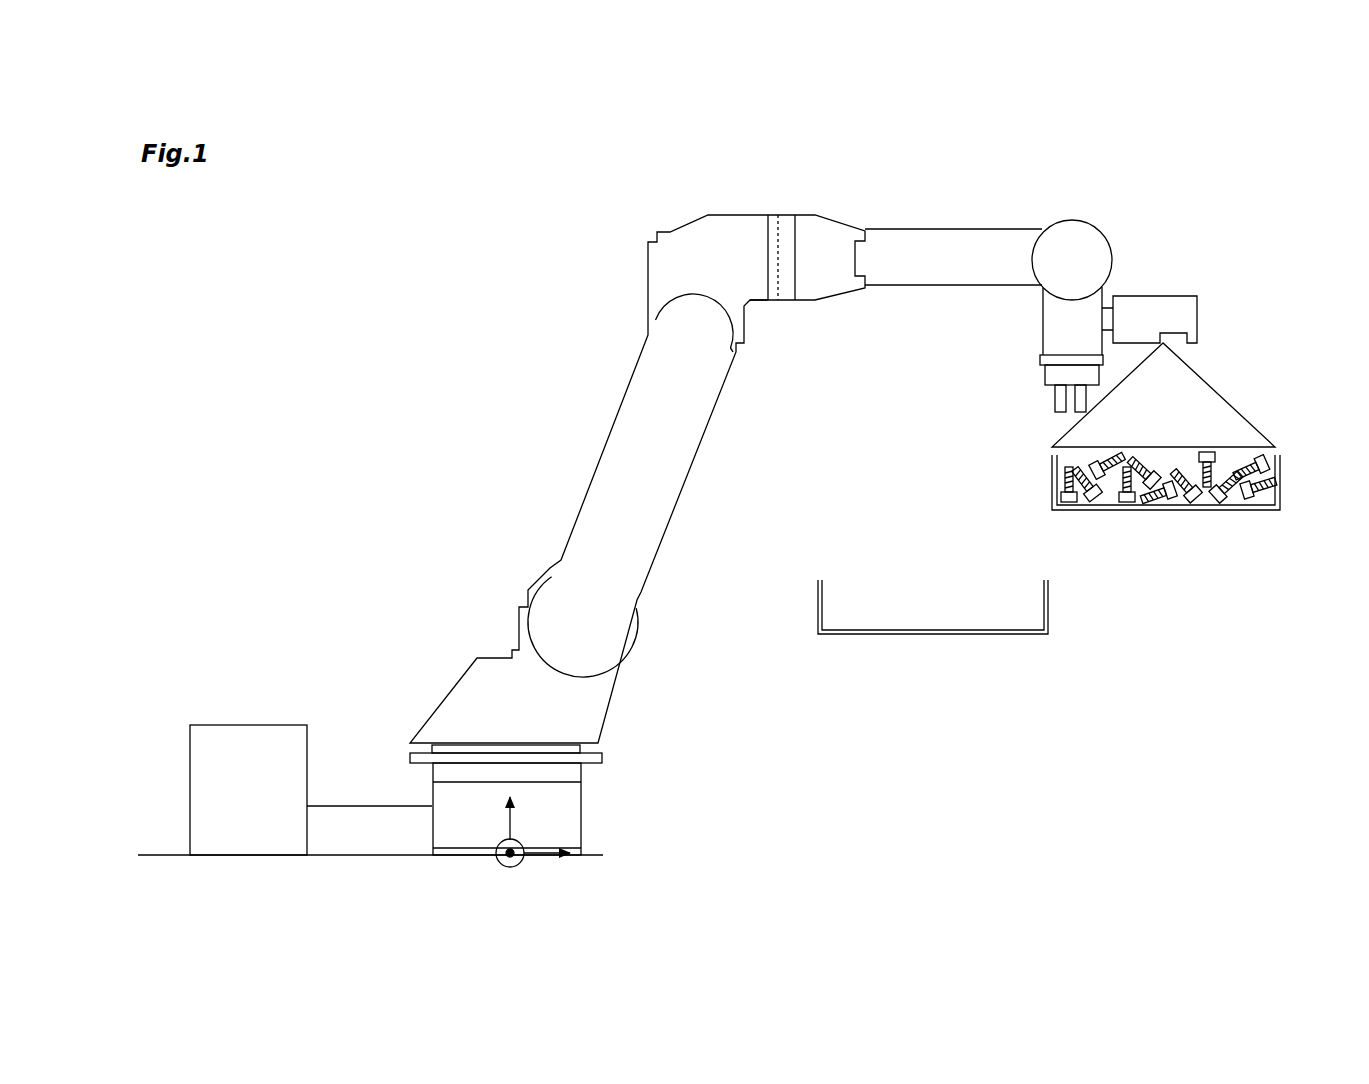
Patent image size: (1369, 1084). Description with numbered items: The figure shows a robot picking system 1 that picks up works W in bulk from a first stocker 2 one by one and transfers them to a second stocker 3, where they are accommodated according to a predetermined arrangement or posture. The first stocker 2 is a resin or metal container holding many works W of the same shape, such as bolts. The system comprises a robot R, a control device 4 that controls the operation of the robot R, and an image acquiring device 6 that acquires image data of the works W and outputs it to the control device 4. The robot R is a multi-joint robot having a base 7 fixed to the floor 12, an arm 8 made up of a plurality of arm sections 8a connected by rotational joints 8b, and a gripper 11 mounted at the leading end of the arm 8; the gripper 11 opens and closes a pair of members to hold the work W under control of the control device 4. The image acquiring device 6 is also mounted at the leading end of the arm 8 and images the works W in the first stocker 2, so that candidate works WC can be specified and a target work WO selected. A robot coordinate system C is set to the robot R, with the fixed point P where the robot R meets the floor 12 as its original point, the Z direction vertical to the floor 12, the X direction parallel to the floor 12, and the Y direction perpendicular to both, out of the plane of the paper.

The robot picking system 1 is at (427, 217).
The robot R is at (595, 352).
The arm 8 is at (682, 497).
The arm section 8a is at (742, 227).
The joint 8b is at (847, 260).
The gripper 11 is at (1042, 383).
The base 7 is at (582, 812).
The floor 12 is at (603, 855).
The control device 4 is at (245, 725).
The image acquiring device 6 is at (1178, 296).
The first stocker 2 is at (1280, 487).
The second stocker 3 is at (1048, 608).
The work W is at (1169, 485).
The target work WO is at (1127, 455).
The candidate work WC is at (1177, 463).
The robot coordinate system C is at (499, 856).
The fixed point P is at (498, 858).
The X direction X is at (548, 870).
The Y direction Y is at (512, 864).
The Z direction Z is at (497, 812).